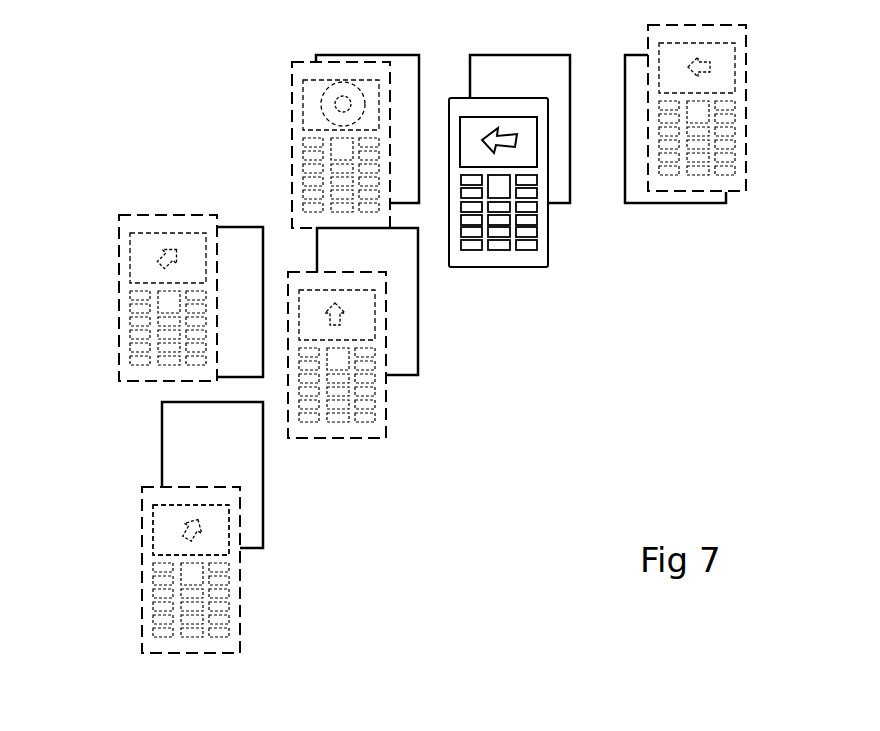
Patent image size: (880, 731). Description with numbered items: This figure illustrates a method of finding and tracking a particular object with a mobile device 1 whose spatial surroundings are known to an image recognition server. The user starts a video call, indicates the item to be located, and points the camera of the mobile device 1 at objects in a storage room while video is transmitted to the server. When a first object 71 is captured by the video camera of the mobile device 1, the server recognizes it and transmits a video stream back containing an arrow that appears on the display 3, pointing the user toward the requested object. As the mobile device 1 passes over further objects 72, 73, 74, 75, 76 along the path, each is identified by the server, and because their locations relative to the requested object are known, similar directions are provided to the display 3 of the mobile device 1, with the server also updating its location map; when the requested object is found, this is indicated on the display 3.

The mobile device 1 is at (441, 339).
The display 3 is at (153, 540).
The first object 71 is at (162, 432).
The second display state 72 is at (235, 227).
The third display state 73 is at (418, 341).
The fourth display state 74 is at (370, 55).
The fifth display state 75 is at (507, 55).
The sixth display state 76 is at (697, 203).